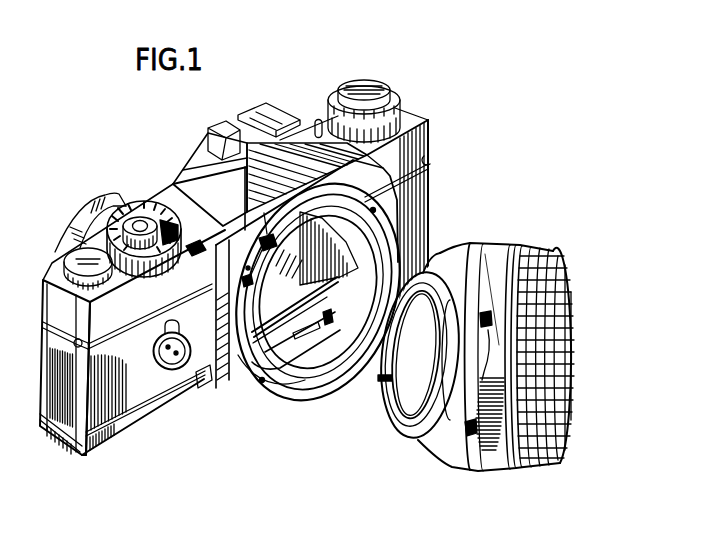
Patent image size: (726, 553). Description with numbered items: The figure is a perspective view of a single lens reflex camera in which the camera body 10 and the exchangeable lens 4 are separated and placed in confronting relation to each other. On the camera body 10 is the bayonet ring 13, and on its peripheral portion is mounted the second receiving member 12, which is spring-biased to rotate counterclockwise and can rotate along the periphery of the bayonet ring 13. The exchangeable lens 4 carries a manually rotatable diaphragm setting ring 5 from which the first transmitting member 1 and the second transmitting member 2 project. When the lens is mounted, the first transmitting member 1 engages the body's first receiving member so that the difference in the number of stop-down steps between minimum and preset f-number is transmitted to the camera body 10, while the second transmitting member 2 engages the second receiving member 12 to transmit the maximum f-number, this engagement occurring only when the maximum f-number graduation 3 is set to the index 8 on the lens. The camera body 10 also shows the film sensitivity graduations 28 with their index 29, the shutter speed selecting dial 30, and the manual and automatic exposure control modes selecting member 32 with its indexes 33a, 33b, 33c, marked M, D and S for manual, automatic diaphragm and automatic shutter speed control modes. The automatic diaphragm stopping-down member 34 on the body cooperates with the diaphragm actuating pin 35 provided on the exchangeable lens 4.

The first transmitting member 1 is at (484, 349).
The second transmitting member 2 is at (452, 464).
The maximum f-number graduation 3 is at (485, 364).
The exchangeable lens 4 is at (557, 310).
The diaphragm setting ring 5 is at (507, 264).
The index 8 is at (508, 246).
The camera body 10 is at (262, 249).
The second receiving member 12 is at (250, 284).
The bayonet ring 13 is at (318, 299).
The film sensitivity graduations 28 is at (336, 98).
The index 29 is at (313, 130).
The shutter speed selecting dial 30 is at (147, 280).
The manual and automatic exposure control modes selecting member 32 is at (192, 250).
The index 33a is at (153, 207).
The index 33b is at (168, 202).
The index 33c is at (203, 374).
The automatic diaphragm stopping-down member 34 is at (328, 326).
The diaphragm actuating pin 35 is at (386, 381).